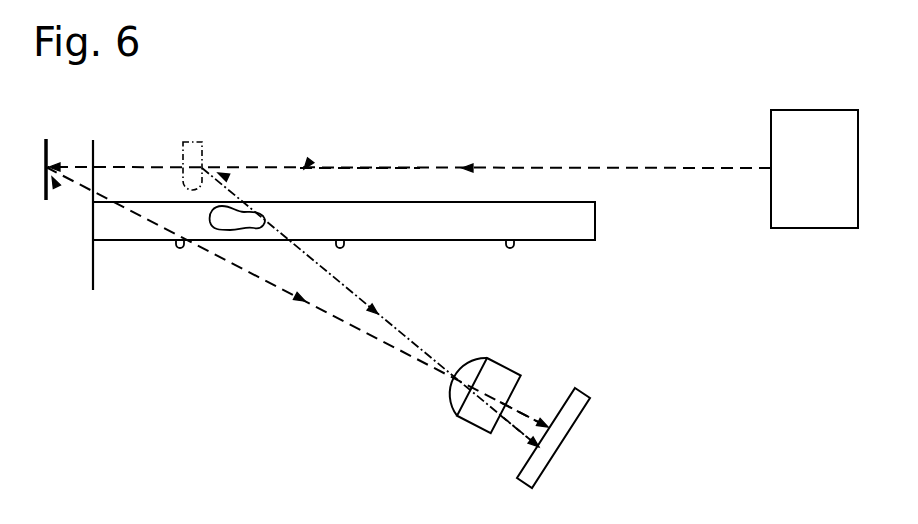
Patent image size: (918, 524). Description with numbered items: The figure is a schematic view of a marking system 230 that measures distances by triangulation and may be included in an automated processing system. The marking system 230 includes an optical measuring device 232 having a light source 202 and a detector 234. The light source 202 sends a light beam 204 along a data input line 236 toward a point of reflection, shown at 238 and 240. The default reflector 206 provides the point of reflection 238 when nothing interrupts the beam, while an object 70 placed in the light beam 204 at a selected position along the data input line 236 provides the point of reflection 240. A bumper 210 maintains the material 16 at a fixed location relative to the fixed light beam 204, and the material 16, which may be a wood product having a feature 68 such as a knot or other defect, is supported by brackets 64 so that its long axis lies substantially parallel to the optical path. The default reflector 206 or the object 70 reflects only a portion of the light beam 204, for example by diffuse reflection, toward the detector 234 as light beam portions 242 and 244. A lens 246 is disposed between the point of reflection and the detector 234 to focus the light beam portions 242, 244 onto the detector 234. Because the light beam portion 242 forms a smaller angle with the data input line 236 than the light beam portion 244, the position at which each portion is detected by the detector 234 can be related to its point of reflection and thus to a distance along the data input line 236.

The material 16 is at (145, 242).
The brackets 64 is at (513, 249).
The feature 68 is at (232, 224).
The object 70 is at (182, 160).
The light source 202 is at (800, 109).
The light beam 204 is at (562, 167).
The default reflector 206 is at (49, 153).
The bumper 210 is at (92, 281).
The marking system 230 is at (243, 93).
The optical measuring device 232 is at (762, 272).
The detector 234 is at (586, 409).
The data input line 236 is at (306, 164).
The point of reflection 238 is at (57, 186).
The point of reflection 240 is at (224, 176).
The light beam portion 242 is at (547, 422).
The light beam portion 244 is at (534, 448).
The lens 246 is at (474, 364).